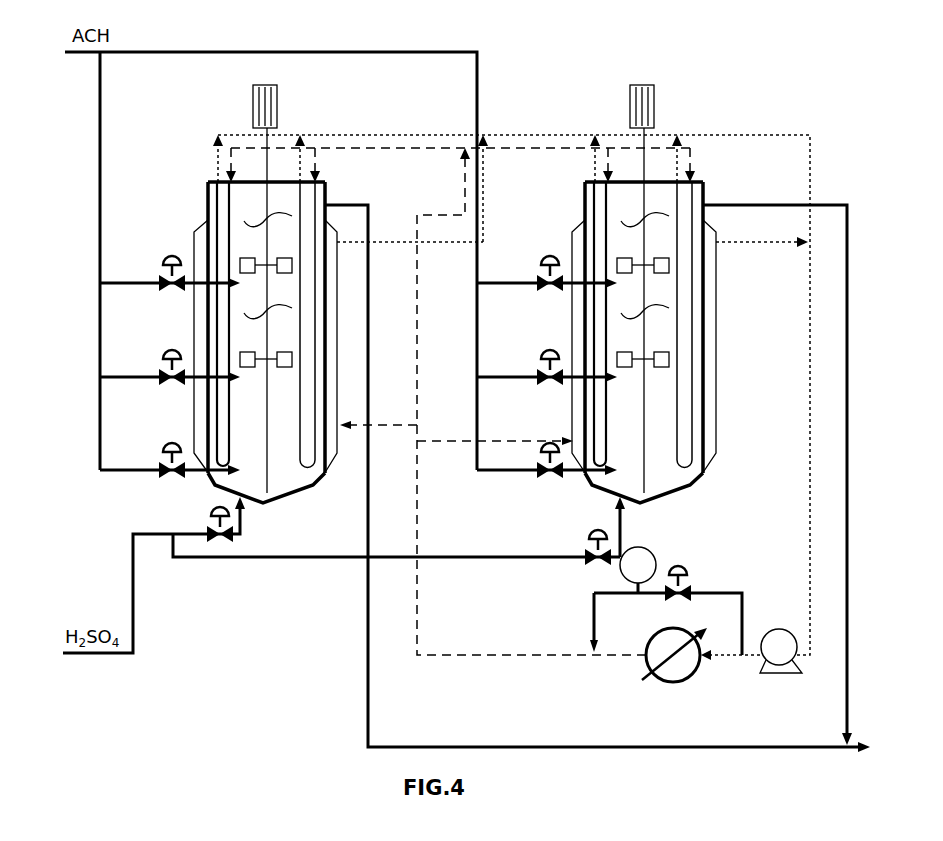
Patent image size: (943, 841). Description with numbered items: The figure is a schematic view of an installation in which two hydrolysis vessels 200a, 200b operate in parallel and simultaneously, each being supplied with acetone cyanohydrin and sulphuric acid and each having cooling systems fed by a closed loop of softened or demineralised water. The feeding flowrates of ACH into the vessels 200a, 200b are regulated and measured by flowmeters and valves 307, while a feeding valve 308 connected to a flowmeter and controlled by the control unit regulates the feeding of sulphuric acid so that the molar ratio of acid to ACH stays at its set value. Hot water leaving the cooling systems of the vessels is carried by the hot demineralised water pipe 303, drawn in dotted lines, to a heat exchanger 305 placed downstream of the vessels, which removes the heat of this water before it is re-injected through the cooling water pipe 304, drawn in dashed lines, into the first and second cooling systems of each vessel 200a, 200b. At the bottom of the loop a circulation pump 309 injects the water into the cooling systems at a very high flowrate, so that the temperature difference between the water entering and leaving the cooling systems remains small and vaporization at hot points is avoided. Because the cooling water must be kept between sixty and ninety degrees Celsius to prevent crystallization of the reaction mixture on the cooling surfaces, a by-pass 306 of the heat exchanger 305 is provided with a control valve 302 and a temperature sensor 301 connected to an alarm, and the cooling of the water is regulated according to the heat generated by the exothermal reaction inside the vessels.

The hydrolysis vessel 200a is at (177, 176).
The hydrolysis vessel 200b is at (716, 184).
The temperature sensor 301 is at (646, 548).
The control valve 302 is at (690, 572).
The hot demineralised water pipe 303 is at (810, 370).
The cooling water pipe 304 is at (451, 659).
The heat exchanger 305 is at (662, 683).
The by-pass 306 is at (699, 560).
The valve 307 is at (151, 255).
The feeding valve 308 is at (204, 516).
The circulation pump 309 is at (787, 683).